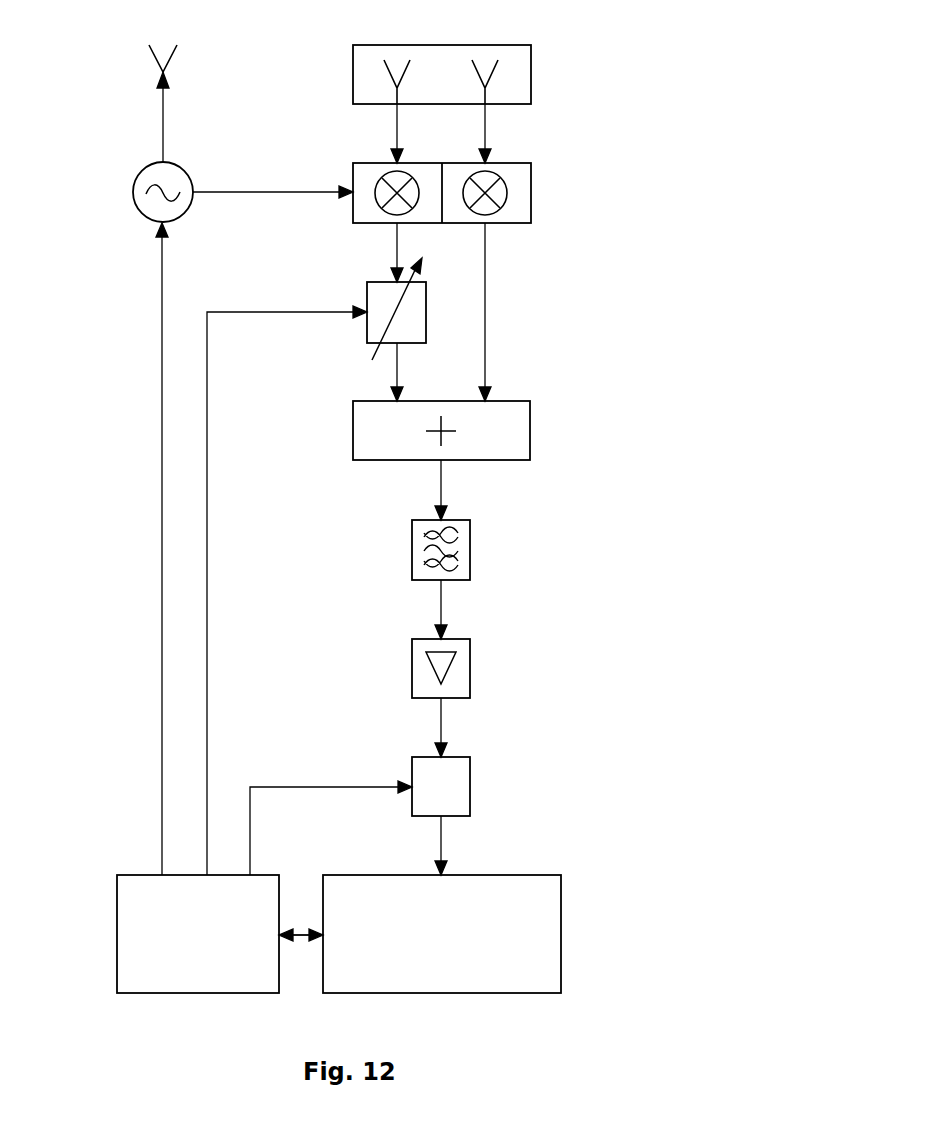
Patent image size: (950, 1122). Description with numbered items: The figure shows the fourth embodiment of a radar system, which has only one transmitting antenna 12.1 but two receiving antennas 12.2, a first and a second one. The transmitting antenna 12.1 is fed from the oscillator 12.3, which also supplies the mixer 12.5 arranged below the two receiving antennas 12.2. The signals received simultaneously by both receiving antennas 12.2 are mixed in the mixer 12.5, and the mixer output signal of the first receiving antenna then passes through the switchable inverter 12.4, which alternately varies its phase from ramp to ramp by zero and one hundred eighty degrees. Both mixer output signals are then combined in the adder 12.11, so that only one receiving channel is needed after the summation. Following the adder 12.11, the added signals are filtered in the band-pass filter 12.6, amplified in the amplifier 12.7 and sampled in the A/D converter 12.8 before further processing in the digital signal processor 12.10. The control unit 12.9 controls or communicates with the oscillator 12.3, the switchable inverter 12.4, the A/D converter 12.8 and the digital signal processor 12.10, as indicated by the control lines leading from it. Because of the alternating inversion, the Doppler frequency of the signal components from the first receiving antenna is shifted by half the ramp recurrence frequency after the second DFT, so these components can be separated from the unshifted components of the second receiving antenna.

The transmitting antenna 12.1 is at (150, 61).
The receiving antennas 12.2 is at (531, 74).
The oscillator 12.3 is at (133, 178).
The switchable inverter 12.4 is at (366, 298).
The mixer 12.5 is at (531, 192).
The band-pass filter 12.6 is at (471, 550).
The amplifier 12.7 is at (471, 668).
The A/D converter 12.8 is at (471, 787).
The control unit 12.9 is at (116, 935).
The digital signal processor 12.10 is at (562, 935).
The adder 12.11 is at (531, 431).